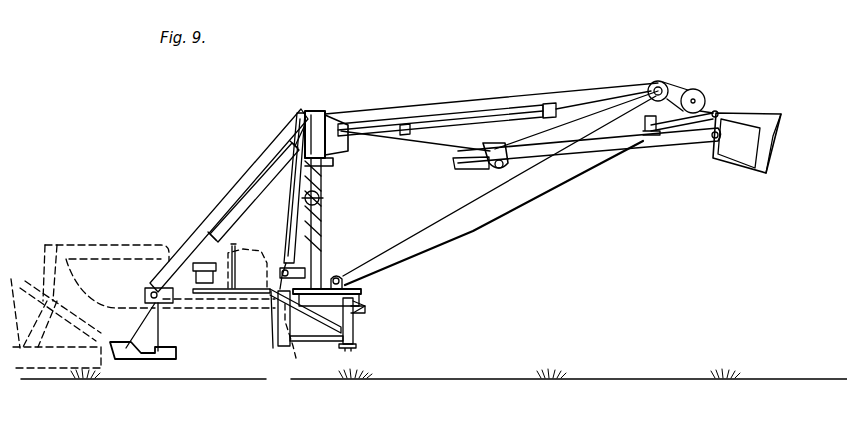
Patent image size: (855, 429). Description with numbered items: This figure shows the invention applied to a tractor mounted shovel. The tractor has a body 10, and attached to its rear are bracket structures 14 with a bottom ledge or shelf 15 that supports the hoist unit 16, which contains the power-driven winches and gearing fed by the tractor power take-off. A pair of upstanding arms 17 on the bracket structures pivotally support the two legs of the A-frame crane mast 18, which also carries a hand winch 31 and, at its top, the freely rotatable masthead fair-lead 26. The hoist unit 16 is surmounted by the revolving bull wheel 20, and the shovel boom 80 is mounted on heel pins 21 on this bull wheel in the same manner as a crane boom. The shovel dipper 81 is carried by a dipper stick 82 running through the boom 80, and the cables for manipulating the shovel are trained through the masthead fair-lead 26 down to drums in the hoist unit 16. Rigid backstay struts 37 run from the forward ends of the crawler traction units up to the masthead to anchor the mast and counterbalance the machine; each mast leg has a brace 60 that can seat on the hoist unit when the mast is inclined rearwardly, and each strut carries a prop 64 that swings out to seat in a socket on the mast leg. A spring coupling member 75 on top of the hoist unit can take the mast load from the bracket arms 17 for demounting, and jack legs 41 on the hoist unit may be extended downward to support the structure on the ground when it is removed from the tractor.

The body 10 is at (128, 247).
The bracket structures 14 is at (274, 355).
The bottom ledge or shelf 15 is at (290, 346).
The hoist unit 16 is at (352, 318).
The upstanding arms 17 is at (278, 252).
The A-frame crane mast 18 is at (284, 212).
The bull wheel 20 is at (360, 294).
The heel pin 21 is at (332, 275).
The masthead fair-lead 26 is at (325, 118).
The hand winch 31 is at (320, 197).
The backstay strut 37 is at (210, 224).
The jack legs 41 is at (356, 349).
The brace 60 is at (310, 232).
The prop 64 is at (240, 216).
The coupling member 75 is at (297, 268).
The shovel boom 80 is at (470, 230).
The shovel dipper 81 is at (735, 172).
The dipper stick 82 is at (643, 154).